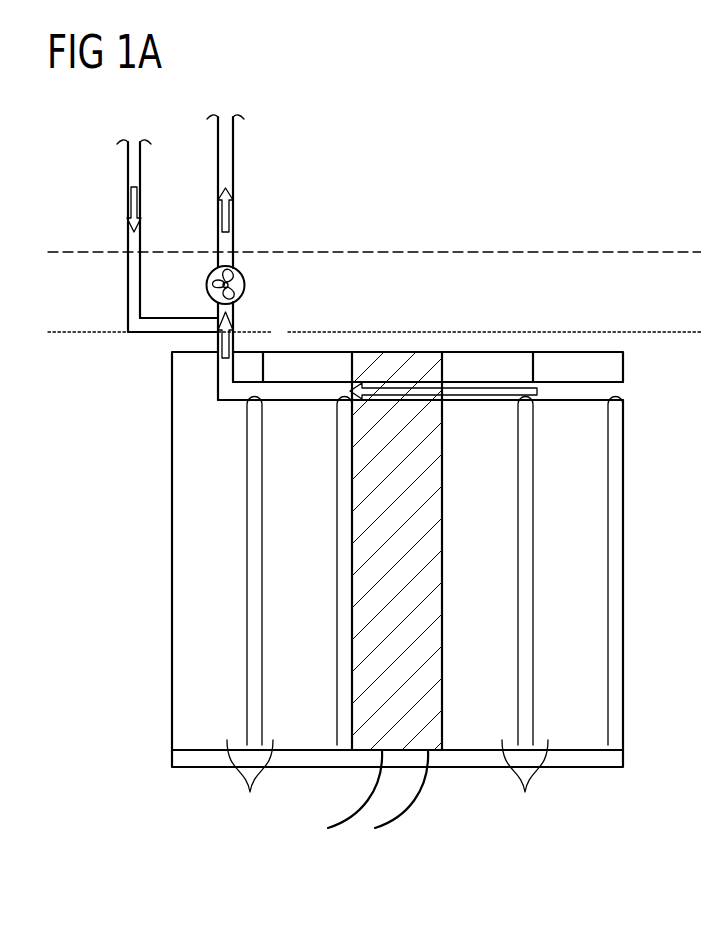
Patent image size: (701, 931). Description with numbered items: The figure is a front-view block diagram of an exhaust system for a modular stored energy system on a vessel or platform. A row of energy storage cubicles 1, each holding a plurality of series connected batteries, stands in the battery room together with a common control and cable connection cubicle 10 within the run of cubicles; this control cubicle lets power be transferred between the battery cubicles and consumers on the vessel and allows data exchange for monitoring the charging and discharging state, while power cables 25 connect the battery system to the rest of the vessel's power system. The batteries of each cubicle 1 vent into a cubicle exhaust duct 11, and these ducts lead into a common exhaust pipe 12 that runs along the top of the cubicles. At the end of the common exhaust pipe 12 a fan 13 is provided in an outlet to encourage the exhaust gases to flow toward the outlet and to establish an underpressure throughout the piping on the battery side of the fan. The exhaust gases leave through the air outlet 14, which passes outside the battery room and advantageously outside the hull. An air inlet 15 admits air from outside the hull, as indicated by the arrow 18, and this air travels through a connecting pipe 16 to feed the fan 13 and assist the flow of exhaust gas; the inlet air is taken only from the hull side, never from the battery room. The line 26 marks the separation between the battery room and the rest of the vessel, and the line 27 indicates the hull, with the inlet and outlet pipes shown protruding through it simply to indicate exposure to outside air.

The energy storage cubicle 1 is at (387, 782).
The control and cable connection cubicle 10 is at (407, 362).
The cubicle exhaust duct 11 is at (262, 490).
The common exhaust pipe 12 is at (617, 390).
The fan 13 is at (245, 278).
The air outlet 14 is at (227, 152).
The air inlet 15 is at (128, 160).
The connecting line 16 is at (162, 325).
The arrow 18 is at (140, 205).
The power cables 25 is at (345, 800).
The line 26 is at (527, 330).
The line 27 is at (502, 250).